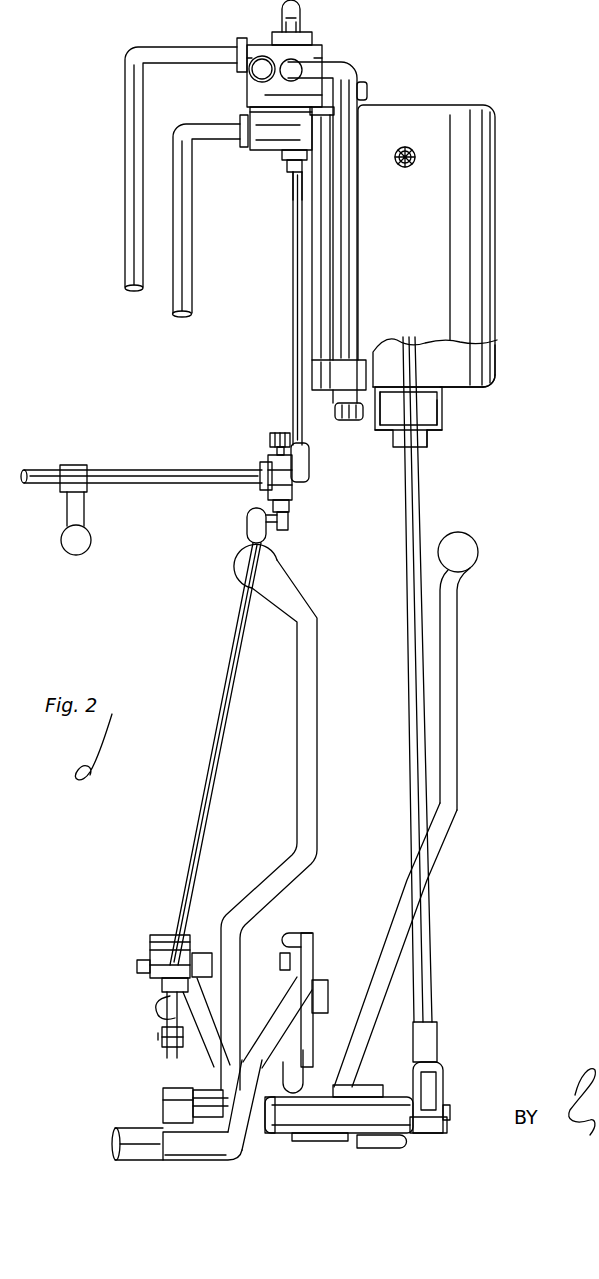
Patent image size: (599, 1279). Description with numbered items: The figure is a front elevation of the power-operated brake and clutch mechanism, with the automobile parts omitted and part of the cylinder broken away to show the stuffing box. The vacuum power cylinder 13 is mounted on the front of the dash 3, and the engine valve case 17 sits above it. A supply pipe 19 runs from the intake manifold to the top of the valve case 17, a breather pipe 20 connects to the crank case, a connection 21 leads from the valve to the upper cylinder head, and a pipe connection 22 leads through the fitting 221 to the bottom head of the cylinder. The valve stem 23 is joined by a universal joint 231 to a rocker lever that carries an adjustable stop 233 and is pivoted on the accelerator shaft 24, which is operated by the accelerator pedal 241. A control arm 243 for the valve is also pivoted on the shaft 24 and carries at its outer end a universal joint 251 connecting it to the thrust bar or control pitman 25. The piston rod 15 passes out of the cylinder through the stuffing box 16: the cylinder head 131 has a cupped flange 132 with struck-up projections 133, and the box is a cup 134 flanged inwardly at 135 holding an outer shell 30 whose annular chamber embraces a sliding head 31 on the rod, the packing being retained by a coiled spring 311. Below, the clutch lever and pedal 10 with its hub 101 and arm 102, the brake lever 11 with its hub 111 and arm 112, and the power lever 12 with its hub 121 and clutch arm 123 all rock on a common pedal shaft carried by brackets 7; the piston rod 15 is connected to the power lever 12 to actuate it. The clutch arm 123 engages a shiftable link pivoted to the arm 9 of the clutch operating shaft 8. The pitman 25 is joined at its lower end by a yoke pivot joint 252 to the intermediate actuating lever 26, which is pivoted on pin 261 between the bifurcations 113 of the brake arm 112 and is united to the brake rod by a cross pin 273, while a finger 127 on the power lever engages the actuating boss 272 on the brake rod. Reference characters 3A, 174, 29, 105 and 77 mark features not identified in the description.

The dash 3 is at (302, 17).
The section line 3A is at (233, 110).
The engine valve case 17 is at (313, 52).
The valve port 174 is at (249, 90).
The supply pipe 19 is at (134, 282).
The breather pipe 20 is at (194, 290).
The connection 21 is at (367, 90).
The pipe connection 22 is at (334, 136).
The fitting 221 is at (350, 421).
The valve stem 23 is at (296, 270).
The adjustable stop 233 is at (280, 433).
The universal joint 231 is at (309, 476).
The control arm 243 is at (290, 521).
The accelerator shaft 24 is at (211, 470).
The accelerator pedal 241 is at (92, 541).
The universal joint 251 is at (252, 528).
The thrust bar 25 is at (242, 607).
The brake lever 11 is at (308, 680).
The clutch lever 10 is at (446, 660).
The piston rod 15 is at (432, 960).
The power cylinder 13 is at (483, 228).
The hole 29 is at (411, 168).
The outer shell 30 is at (426, 398).
The struck-up projections 133 is at (498, 369).
The cupped flange 132 is at (500, 386).
The head 131 is at (489, 390).
The sliding head 31 is at (445, 413).
The cup 134 is at (446, 423).
The stuffing box 16 is at (444, 430).
The inward flange 135 is at (387, 436).
The coiled spring 311 is at (430, 440).
The intermediate actuating lever 26 is at (158, 1003).
The pin 261 is at (152, 936).
The actuating boss 272 is at (205, 953).
The bifurcations 113 is at (138, 958).
The cross pin 273 is at (152, 990).
The yoke pivot joint 252 is at (160, 1040).
The finger 127 is at (207, 983).
The brake lever arm 112 is at (212, 1010).
The clutch arm 123 is at (273, 1027).
The tab 105 is at (291, 935).
The clutch pedal arm 102 is at (314, 945).
The clutch operating shaft 8 is at (322, 1070).
The brackets 7 is at (420, 933).
The hub 111 is at (206, 1102).
The arm 9 is at (234, 1140).
The power lever 12 is at (396, 1110).
The hub 121 is at (267, 1137).
The hub 101 is at (324, 1142).
The collar 77 is at (358, 1150).